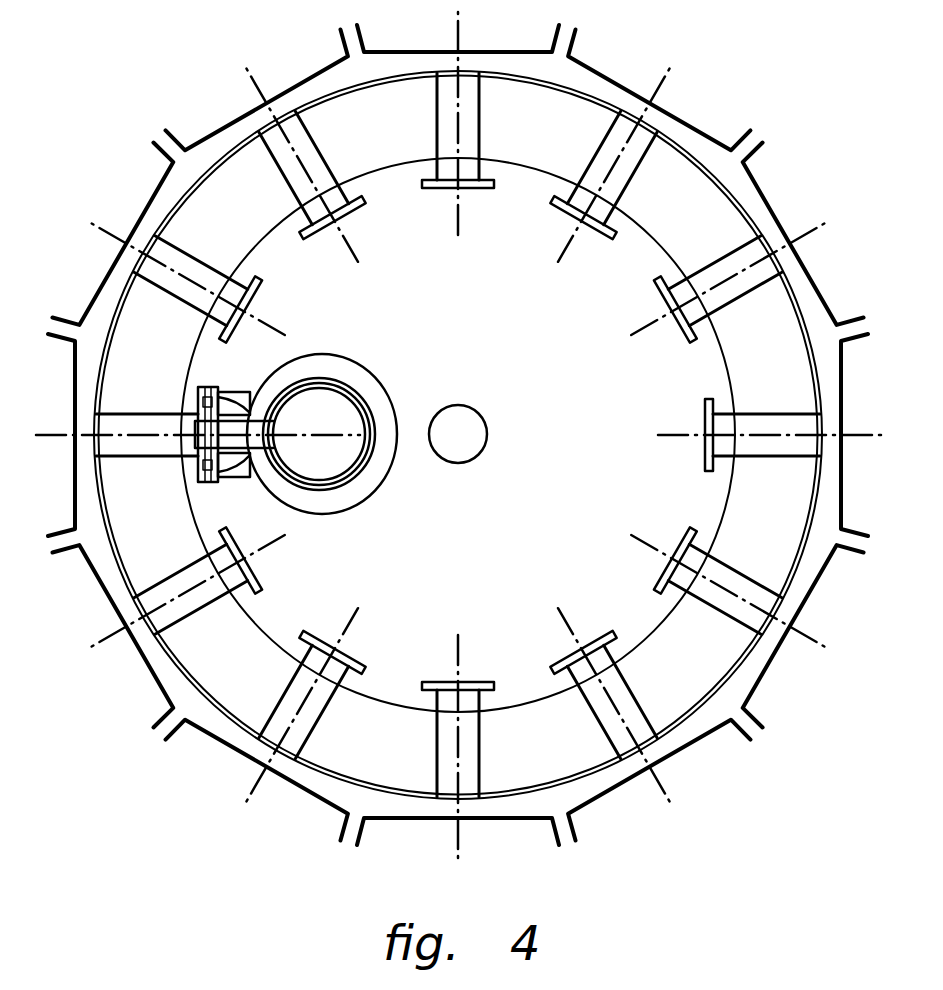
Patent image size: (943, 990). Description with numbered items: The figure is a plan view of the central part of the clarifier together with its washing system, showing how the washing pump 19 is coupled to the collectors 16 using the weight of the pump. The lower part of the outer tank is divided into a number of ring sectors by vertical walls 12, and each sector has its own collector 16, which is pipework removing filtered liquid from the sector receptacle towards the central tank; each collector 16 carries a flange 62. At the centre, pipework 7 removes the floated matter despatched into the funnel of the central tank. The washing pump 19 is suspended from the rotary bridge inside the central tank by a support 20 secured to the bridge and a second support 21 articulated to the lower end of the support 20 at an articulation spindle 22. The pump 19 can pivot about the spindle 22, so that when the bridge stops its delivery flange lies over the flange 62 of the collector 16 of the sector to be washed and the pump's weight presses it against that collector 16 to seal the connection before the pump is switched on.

The pipework 7 is at (487, 432).
The vertical walls 12 is at (353, 825).
The collector 16 is at (598, 143).
The washing pump 19 is at (373, 388).
The support 20 is at (197, 405).
The support 21 is at (288, 422).
The articulation spindle 22 is at (213, 388).
The flange of the collector 62 is at (424, 189).